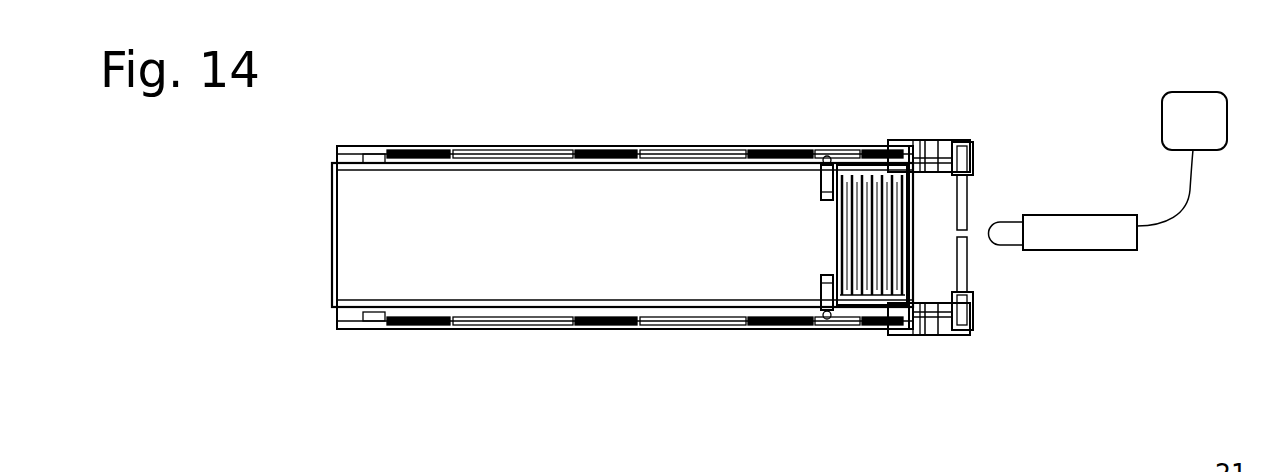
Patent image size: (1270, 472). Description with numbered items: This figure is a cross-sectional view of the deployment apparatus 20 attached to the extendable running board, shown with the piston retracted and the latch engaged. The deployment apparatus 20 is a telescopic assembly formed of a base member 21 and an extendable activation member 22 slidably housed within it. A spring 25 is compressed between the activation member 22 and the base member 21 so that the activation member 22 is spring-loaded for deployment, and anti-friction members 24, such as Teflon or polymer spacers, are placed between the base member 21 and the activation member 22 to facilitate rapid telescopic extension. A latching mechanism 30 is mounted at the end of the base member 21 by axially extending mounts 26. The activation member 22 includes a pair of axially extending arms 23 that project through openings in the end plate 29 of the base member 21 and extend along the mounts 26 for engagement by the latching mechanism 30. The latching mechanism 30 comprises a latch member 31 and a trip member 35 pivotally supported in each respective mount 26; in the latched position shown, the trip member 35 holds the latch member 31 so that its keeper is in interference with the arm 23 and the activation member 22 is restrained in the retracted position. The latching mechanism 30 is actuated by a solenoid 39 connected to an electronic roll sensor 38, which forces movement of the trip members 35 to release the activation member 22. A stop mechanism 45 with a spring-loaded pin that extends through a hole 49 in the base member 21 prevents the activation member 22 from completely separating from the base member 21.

The deployment apparatus 20 is at (269, 311).
The base member 21 is at (540, 150).
The activation member 22 is at (331, 268).
The axially extending arms 23 is at (858, 165).
The anti-friction members 24 is at (432, 158).
The spring 25 is at (887, 300).
The mounts 26 is at (976, 153).
The end plate 29 is at (913, 203).
The latching mechanism 30 is at (1030, 357).
The latch member 31 is at (931, 140).
The trip member 35 is at (965, 215).
The electronic roll sensor 38 is at (1176, 110).
The solenoid 39 is at (1137, 237).
The stop mechanism 45 is at (823, 272).
The hole 49 is at (371, 172).